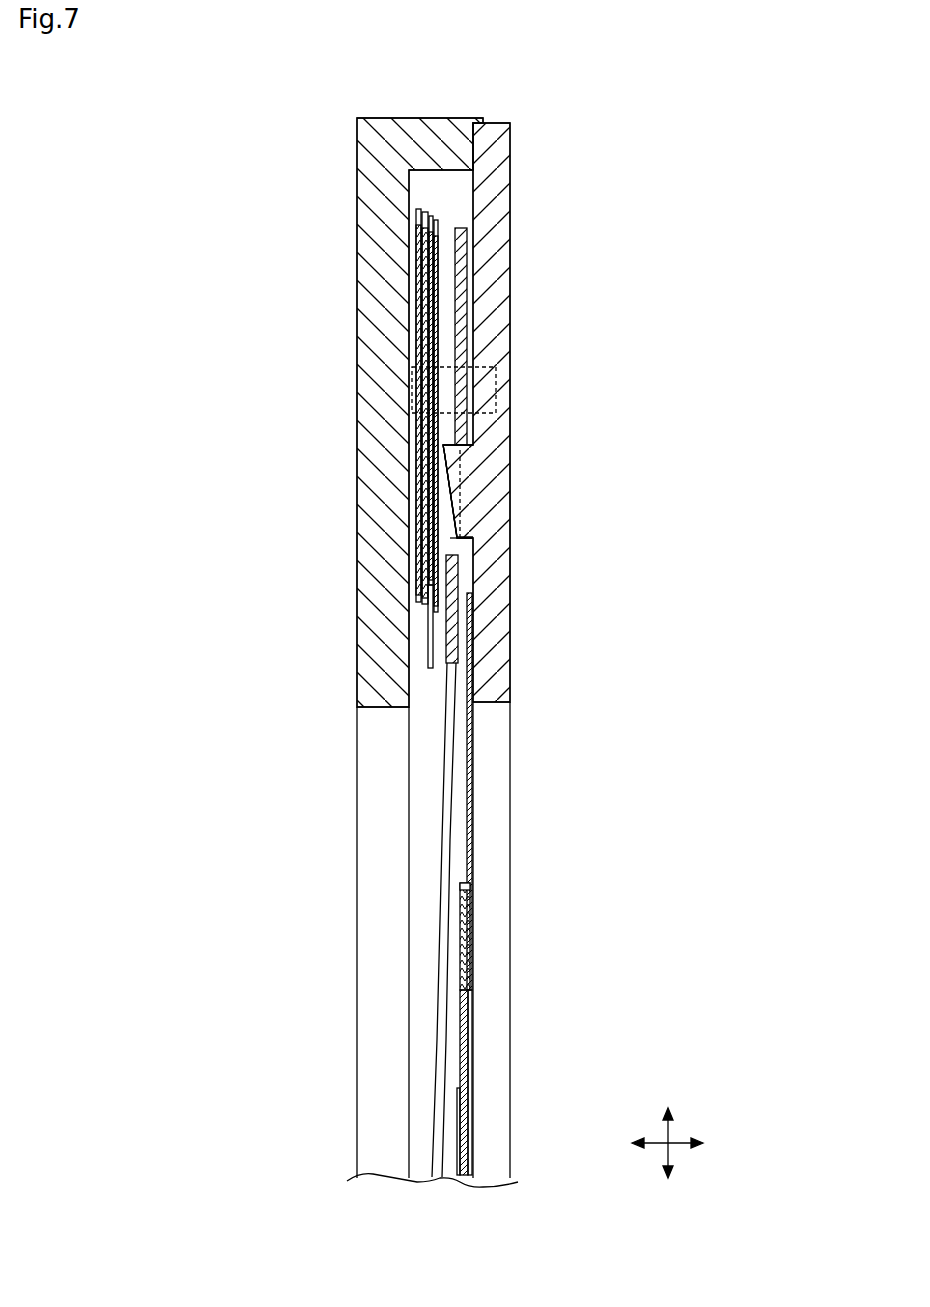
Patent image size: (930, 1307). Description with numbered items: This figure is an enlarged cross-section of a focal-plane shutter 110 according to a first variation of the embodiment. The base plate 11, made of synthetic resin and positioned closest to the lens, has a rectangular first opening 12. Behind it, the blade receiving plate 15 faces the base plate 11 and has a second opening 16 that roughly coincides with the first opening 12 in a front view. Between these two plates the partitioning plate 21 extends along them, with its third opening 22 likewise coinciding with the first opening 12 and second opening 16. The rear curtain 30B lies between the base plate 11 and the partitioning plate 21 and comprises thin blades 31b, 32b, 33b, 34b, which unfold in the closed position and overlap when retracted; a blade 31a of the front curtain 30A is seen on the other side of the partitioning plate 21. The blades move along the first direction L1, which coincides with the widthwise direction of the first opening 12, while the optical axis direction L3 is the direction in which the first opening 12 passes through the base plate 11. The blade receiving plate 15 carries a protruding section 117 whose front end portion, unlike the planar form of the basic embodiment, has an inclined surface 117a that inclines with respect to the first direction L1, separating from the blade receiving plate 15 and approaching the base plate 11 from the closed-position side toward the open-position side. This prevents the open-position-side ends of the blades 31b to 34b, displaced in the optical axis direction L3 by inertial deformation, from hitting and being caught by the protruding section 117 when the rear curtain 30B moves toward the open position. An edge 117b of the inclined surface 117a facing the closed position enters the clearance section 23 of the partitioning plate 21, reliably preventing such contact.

The connector 110 is at (306, 145).
The base plate 11 is at (375, 224).
The first opening 12 is at (383, 709).
The blade receiving plate 15 is at (505, 202).
The second opening 16 is at (497, 704).
The partitioning plate 21 is at (462, 291).
The third opening 22 is at (452, 668).
The clearance section 23 is at (455, 447).
The protruding section 117 is at (453, 493).
The inclined surface 117a is at (453, 525).
The edge 117b is at (455, 540).
The rear curtain 30B is at (310, 438).
The blade 31b is at (413, 358).
The blade 32b is at (413, 400).
The blade 33b is at (413, 443).
The blade 34b is at (435, 483).
The first flexible substrate 30A is at (561, 884).
The blade 31a is at (473, 776).
The first direction L1 is at (668, 1133).
The optical axis direction L3 is at (670, 1145).